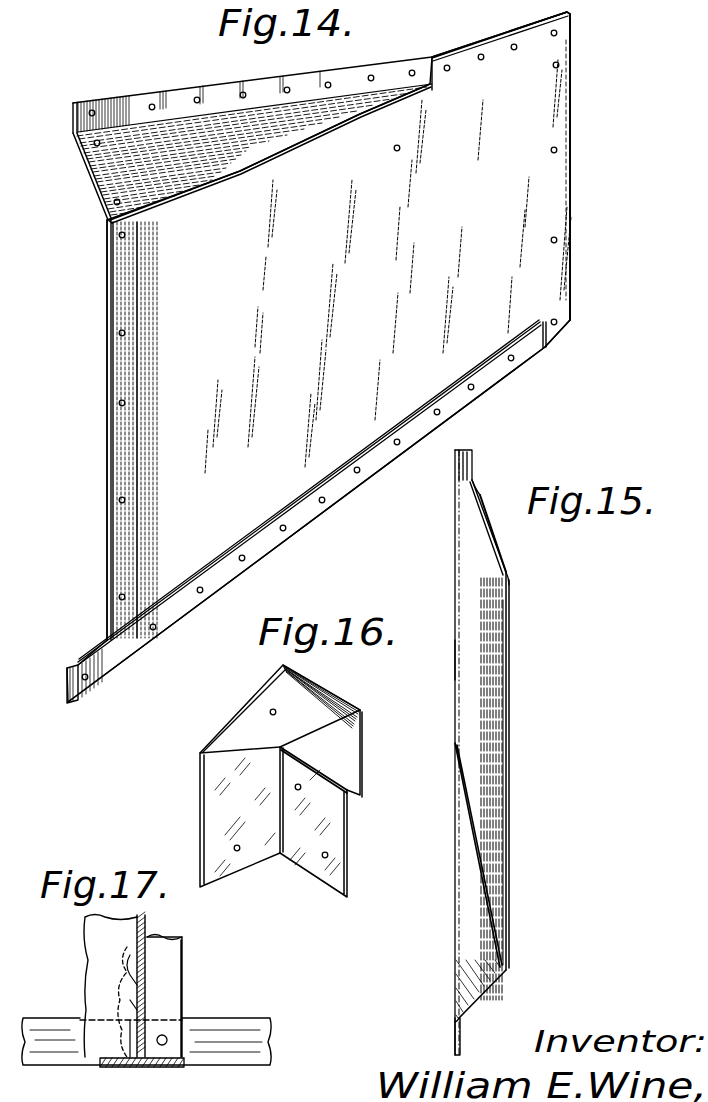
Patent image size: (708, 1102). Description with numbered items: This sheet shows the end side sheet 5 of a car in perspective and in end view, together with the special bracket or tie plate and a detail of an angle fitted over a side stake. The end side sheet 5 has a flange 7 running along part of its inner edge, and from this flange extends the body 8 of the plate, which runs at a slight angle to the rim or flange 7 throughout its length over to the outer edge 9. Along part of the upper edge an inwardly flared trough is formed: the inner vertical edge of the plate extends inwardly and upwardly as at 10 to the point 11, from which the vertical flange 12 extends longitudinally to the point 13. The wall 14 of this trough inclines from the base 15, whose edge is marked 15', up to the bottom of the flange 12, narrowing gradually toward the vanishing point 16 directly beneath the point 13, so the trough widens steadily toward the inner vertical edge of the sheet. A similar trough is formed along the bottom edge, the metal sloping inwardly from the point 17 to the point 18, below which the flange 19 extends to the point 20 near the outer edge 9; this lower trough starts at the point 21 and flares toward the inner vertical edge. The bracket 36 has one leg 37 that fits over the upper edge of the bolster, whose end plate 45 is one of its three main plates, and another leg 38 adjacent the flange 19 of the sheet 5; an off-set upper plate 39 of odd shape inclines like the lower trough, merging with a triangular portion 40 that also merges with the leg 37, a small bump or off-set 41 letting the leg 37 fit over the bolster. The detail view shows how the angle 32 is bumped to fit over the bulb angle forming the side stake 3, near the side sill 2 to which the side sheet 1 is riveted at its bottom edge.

In FIG. 14, the end side sheet 5 is at (319, 357).
In FIG. 15, the end side sheet 5 is at (487, 748).
In FIG. 14, the flange 7 is at (120, 430).
In FIG. 15, the flange 7 is at (507, 798).
In FIG. 14, the body 8 is at (157, 300).
In FIG. 15, the body 8 is at (486, 653).
In FIG. 14, the edge 9 is at (571, 183).
In FIG. 15, the edge 9 is at (457, 657).
In FIG. 14, the inner vertical edge portion 10 is at (92, 182).
In FIG. 15, the inner vertical edge portion 10 is at (481, 535).
In FIG. 14, the point 11 is at (73, 133).
In FIG. 14, the vertical flange 12 is at (120, 110).
In FIG. 15, the vertical flange 12 is at (474, 458).
In FIG. 14, the point 13 is at (431, 55).
In FIG. 14, the wall of the trough 14 is at (252, 151).
In FIG. 15, the wall of the trough 14 is at (497, 536).
In FIG. 14, the base 15 is at (89, 244).
In FIG. 15, the base 15 is at (461, 592).
In FIG. 14, the lower edge of gusset 15' is at (270, 153).
In FIG. 14, the vanishing point 16 is at (432, 87).
In FIG. 14, the point 17 is at (107, 630).
In FIG. 15, the point 17 is at (500, 968).
In FIG. 14, the point 18 is at (67, 670).
In FIG. 15, the point 18 is at (455, 1017).
In FIG. 14, the flange 19 is at (112, 660).
In FIG. 15, the flange 19 is at (456, 1043).
In FIG. 14, the point 20 is at (546, 348).
In FIG. 14, the point 21 is at (547, 321).
In FIG. 15, the point 21 is at (456, 735).
In FIG. 15, the side sheet 1 is at (467, 483).
In FIG. 16, the bracket 36 is at (275, 852).
In FIG. 16, the leg 37 is at (330, 842).
In FIG. 16, the leg 38 is at (237, 812).
In FIG. 16, the off-set upper plate 39 is at (275, 700).
In FIG. 16, the portion 40 is at (338, 757).
In FIG. 16, the bump or off-set 41 is at (350, 797).
In FIG. 17, the end plate 45 is at (147, 978).
In FIG. 17, the side sill 2 is at (65, 1048).
In FIG. 17, the side stake 3 is at (132, 1062).
In FIG. 17, the angle 32 is at (240, 1050).